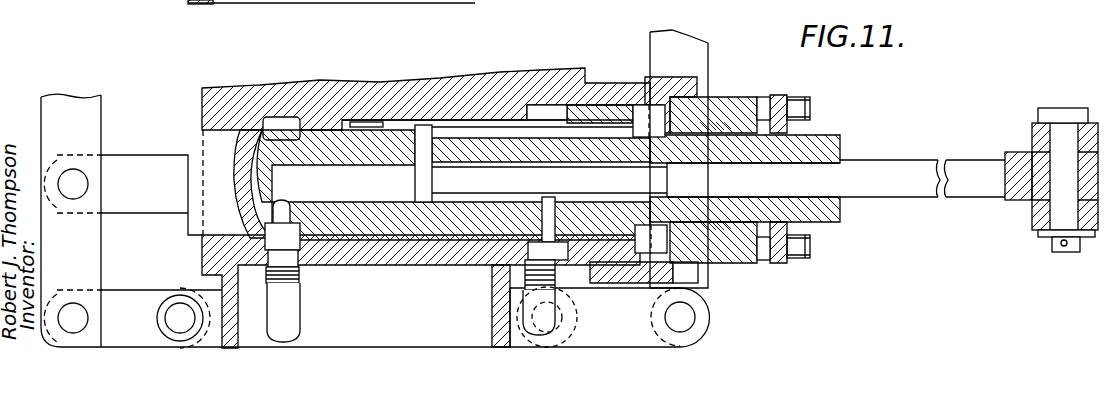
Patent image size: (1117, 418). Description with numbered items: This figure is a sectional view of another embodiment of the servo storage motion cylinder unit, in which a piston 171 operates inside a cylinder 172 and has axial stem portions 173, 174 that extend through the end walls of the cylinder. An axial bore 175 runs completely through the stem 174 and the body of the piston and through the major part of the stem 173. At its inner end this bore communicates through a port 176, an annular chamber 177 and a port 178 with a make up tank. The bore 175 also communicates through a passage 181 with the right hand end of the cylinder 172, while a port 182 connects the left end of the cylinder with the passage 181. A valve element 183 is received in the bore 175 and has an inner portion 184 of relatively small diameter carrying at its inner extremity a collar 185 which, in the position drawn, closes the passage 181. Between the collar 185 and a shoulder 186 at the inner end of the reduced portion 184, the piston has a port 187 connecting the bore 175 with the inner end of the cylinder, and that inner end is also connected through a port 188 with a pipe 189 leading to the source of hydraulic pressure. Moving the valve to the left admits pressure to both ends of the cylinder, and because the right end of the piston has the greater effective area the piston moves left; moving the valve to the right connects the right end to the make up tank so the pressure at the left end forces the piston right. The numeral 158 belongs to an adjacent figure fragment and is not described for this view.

The plate 158 is at (216, 1).
The piston 171 is at (592, 265).
The cylinder 172 is at (540, 107).
The axial stem portion 173 is at (433, 122).
The axial stem portion 174 is at (828, 135).
The axial bore 175 is at (352, 165).
The port 176 is at (276, 204).
The annular chamber 177 is at (280, 241).
The port 178 is at (290, 257).
The passage 181 is at (508, 130).
The port 182 is at (647, 83).
The valve element 183 is at (961, 188).
The inner portion 184 is at (549, 180).
The collar 185 is at (417, 187).
The shoulder 186 is at (670, 181).
The port 187 is at (545, 222).
The port 188 is at (530, 262).
The pipe 189 is at (528, 317).